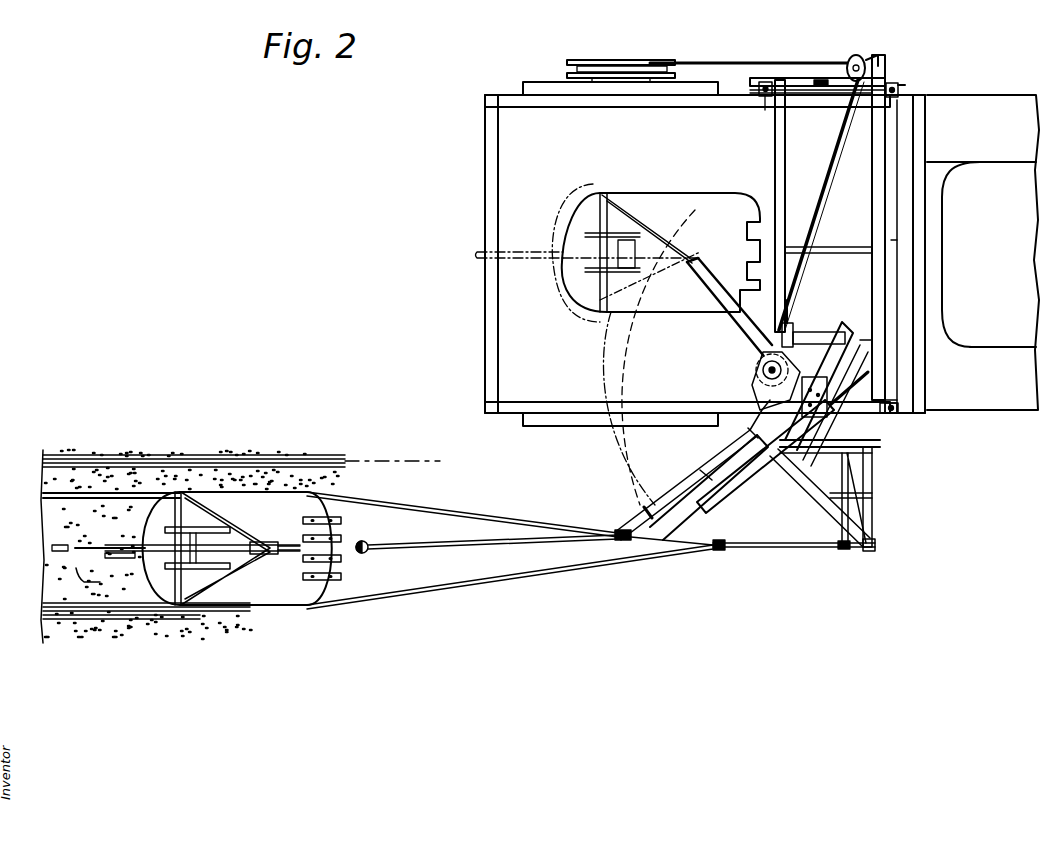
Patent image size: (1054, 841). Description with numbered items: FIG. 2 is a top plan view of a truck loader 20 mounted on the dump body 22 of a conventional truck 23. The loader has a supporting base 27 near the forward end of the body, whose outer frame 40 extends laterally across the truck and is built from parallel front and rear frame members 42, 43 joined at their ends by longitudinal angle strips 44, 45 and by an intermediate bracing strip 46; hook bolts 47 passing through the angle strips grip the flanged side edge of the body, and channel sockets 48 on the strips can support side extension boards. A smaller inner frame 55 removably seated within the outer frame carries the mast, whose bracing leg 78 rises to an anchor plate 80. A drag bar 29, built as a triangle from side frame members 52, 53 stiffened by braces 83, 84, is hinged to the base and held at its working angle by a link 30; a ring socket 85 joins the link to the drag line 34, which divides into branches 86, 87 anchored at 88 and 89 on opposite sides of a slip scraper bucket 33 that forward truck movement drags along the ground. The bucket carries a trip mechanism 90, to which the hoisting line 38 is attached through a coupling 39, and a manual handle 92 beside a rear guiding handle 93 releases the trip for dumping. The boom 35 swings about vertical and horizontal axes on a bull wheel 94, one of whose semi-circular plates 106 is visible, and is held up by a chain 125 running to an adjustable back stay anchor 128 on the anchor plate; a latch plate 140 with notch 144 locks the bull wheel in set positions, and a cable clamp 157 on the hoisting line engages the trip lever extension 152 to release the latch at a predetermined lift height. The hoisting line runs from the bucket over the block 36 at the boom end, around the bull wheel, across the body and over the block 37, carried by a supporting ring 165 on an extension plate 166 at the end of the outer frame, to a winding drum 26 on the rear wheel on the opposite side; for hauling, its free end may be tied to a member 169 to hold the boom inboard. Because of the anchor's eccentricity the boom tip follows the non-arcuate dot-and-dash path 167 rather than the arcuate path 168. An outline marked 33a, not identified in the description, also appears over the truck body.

The loader 20 is at (890, 437).
The dump body 22 is at (658, 406).
The truck 23 is at (980, 158).
The winding drum 26 is at (612, 60).
The supporting base 27 is at (886, 240).
The drag bar 29 is at (872, 505).
The link 30 is at (847, 480).
The slip scraper bucket 33 is at (290, 610).
The hopper 33a is at (672, 312).
The drag line 34 is at (722, 550).
The boom 35 is at (697, 513).
The block 36 is at (648, 540).
The block 37 is at (862, 58).
The hoisting line 38 is at (445, 548).
The coupling 39 is at (268, 542).
The outer frame 40 is at (887, 190).
The front frame member 42 is at (880, 142).
The rear frame member 43 is at (785, 145).
The angle strip 44 is at (901, 87).
The angle strip 45 is at (896, 412).
The intermediate bracing strip 46 is at (832, 254).
The hook bolts 47 is at (765, 80).
The channel sockets 48 is at (764, 102).
The side frame member 52 is at (813, 490).
The side frame member 53 is at (868, 527).
The inner frame 55 is at (872, 400).
The bracing leg 78 is at (847, 327).
The anchor plate 80 is at (814, 377).
The brace 83 is at (807, 477).
The brace 84 is at (833, 490).
The ring socket 85 is at (845, 550).
The drag line branch 86 is at (455, 512).
The drag line branch 87 is at (445, 592).
The anchor 88 is at (252, 485).
The anchor 89 is at (255, 614).
The trip mechanism 90 is at (248, 570).
The manually operable handle 92 is at (97, 579).
The rear guiding handle 93 is at (95, 548).
The bull wheel 94 is at (752, 388).
The semi-circular plate 106 is at (760, 372).
The chain 125 is at (733, 442).
The back stay anchor 128 is at (760, 415).
The latch plate 140 is at (812, 340).
The notch 144 is at (815, 332).
The trip lever extension 152 is at (645, 510).
The cable clamp 157 is at (364, 541).
The supporting ring 165 is at (872, 66).
The extension plate 166 is at (880, 58).
The dot and dash line 167 is at (630, 345).
The dot and dash line 168 is at (603, 363).
The member 169 is at (820, 88).